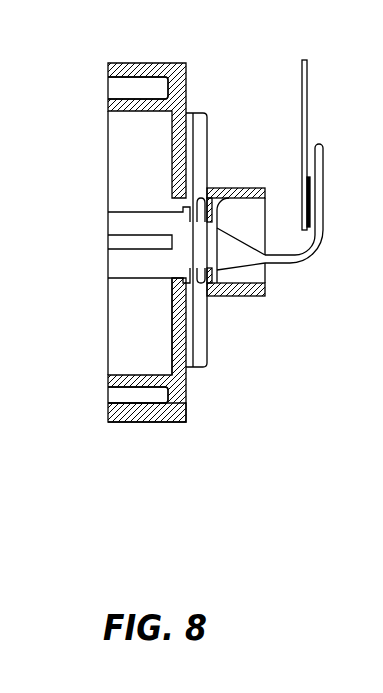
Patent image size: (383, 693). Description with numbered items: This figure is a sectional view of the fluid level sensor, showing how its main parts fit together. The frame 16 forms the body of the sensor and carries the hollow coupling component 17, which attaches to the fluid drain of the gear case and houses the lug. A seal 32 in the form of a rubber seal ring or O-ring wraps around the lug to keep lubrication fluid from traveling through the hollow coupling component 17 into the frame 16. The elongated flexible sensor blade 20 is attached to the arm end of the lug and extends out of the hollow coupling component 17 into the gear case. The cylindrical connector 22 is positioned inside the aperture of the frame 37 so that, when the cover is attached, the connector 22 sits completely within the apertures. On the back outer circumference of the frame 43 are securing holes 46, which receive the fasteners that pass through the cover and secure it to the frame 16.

The frame 16 is at (142, 63).
The back outer circumference of the frame 43 is at (106, 106).
The securing holes 46 is at (138, 400).
The connector 22 is at (155, 262).
The aperture of the frame 37 is at (123, 345).
The seal 32 is at (199, 198).
The hollow coupling component 17 is at (238, 188).
The elongated flexible sensor blade 20 is at (305, 95).